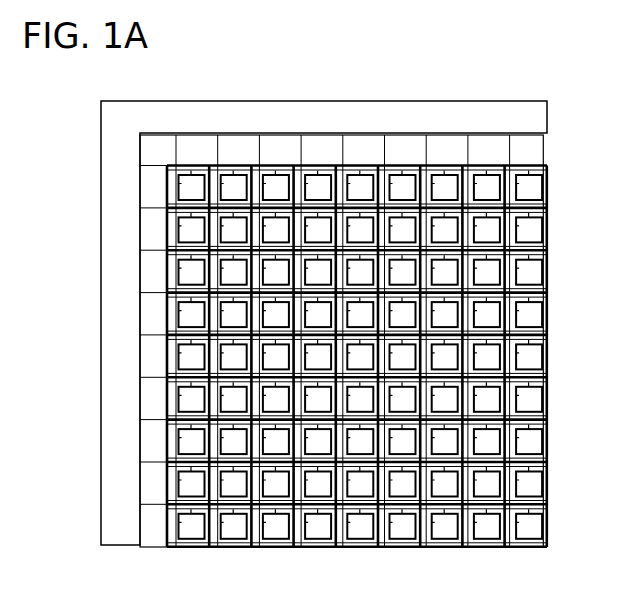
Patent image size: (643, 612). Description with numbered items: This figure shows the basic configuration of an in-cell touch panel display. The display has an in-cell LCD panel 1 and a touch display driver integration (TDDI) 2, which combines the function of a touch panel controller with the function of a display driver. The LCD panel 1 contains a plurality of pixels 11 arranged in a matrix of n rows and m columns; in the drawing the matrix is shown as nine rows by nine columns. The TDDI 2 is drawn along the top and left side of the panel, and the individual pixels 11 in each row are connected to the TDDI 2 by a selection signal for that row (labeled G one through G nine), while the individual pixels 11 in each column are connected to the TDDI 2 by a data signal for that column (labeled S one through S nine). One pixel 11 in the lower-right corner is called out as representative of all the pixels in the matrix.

The in-cell LCD panel 1 is at (551, 178).
The touch display driver integration (TDDI) 2 is at (464, 101).
The pixel 11 is at (527, 526).